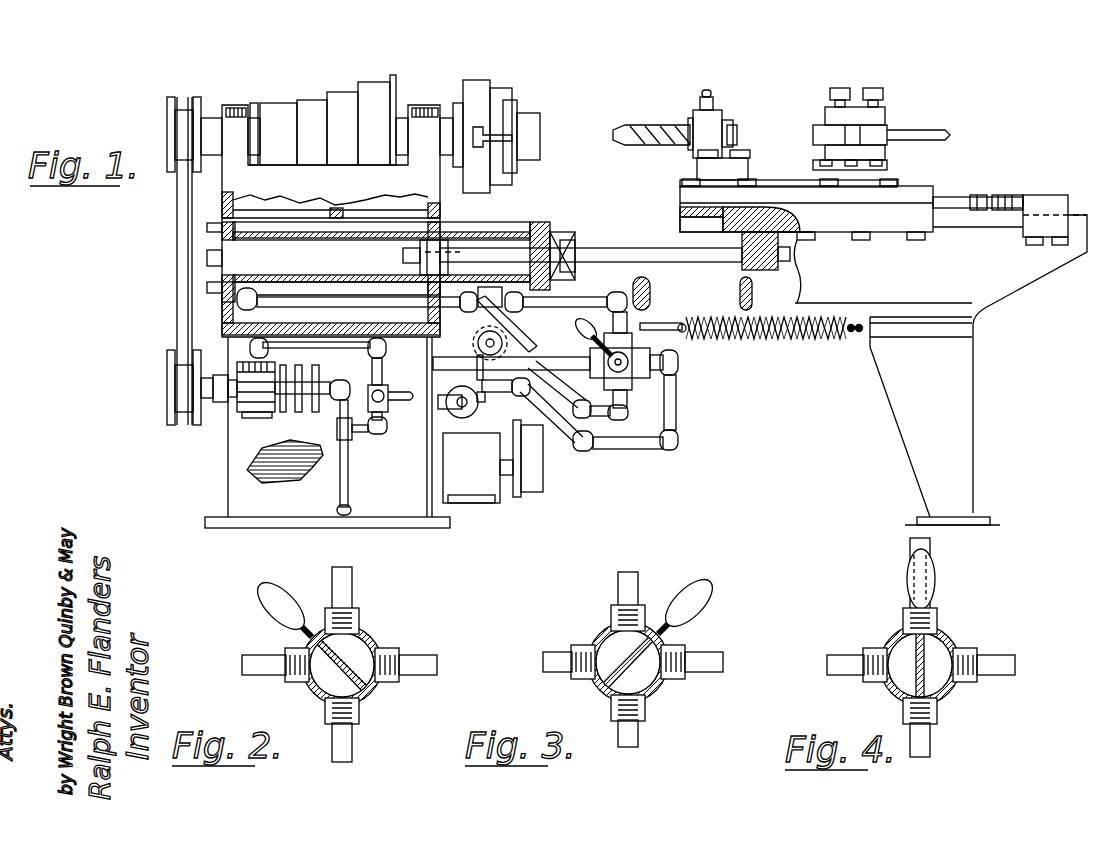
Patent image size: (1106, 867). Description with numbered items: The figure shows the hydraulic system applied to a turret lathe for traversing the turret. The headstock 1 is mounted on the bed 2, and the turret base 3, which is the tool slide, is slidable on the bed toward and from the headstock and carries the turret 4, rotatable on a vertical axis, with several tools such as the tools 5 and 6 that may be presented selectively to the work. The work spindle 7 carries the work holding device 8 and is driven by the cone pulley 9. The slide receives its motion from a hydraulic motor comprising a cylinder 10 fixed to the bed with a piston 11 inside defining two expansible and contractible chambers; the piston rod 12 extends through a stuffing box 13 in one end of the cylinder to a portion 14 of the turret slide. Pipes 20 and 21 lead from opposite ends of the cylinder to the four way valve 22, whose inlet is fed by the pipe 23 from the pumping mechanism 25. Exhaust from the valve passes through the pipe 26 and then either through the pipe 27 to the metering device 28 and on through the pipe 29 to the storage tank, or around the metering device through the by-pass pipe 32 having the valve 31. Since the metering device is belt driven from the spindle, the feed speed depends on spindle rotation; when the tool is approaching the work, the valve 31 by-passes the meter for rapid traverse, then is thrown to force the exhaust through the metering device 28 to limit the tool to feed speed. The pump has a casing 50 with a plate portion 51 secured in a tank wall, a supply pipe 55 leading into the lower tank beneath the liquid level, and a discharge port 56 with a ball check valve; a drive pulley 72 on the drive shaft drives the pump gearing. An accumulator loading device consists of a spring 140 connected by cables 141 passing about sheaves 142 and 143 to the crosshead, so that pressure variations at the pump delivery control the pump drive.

In FIG. 1, the headstock 1 is at (350, 193).
In FIG. 1, the bed 2 is at (872, 283).
In FIG. 1, the turret base 3 is at (895, 202).
In FIG. 1, the turret 4 is at (758, 182).
In FIG. 1, the tool 5 is at (650, 125).
In FIG. 1, the tool 6 is at (886, 135).
In FIG. 1, the work spindle 7 is at (456, 108).
In FIG. 1, the work holding device 8 is at (480, 100).
In FIG. 1, the cone pulley 9 is at (306, 112).
In FIG. 1, the cylinder 10 is at (480, 232).
In FIG. 1, the piston 11 is at (402, 248).
In FIG. 1, the piston rod 12 is at (604, 250).
In FIG. 1, the stuffing box 13 is at (556, 232).
In FIG. 1, the portion of turret slide 14 is at (760, 272).
In FIG. 1, the pipe 20 is at (570, 301).
In FIG. 2, the pipe 20 is at (328, 599).
In FIG. 3, the pipe 20 is at (609, 596).
In FIG. 4, the pipe 20 is at (896, 585).
In FIG. 1, the pipe 21 is at (522, 352).
In FIG. 2, the pipe 21 is at (360, 730).
In FIG. 3, the pipe 21 is at (651, 723).
In FIG. 4, the pipe 21 is at (943, 727).
In FIG. 1, the four way valve 22 is at (633, 366).
In FIG. 2, the four way valve 22 is at (332, 640).
In FIG. 3, the four way valve 22 is at (626, 637).
In FIG. 4, the four way valve 22 is at (910, 647).
In FIG. 1, the pipe 23 is at (652, 449).
In FIG. 2, the pipe 23 is at (412, 651).
In FIG. 3, the pipe 23 is at (708, 645).
In FIG. 4, the pipe 23 is at (986, 647).
In FIG. 1, the pumping mechanism 25 is at (478, 468).
In FIG. 1, the pipe 26 is at (560, 370).
In FIG. 2, the pipe 26 is at (273, 651).
In FIG. 3, the pipe 26 is at (568, 644).
In FIG. 4, the pipe 26 is at (856, 648).
In FIG. 1, the pipe 27 is at (330, 347).
In FIG. 1, the metering device 28 is at (256, 396).
In FIG. 1, the pipe 29 is at (342, 480).
In FIG. 1, the valve 31 is at (386, 410).
In FIG. 1, the pipe 32 is at (362, 438).
In FIG. 1, the casing 50 is at (242, 470).
In FIG. 1, the plate portion 51 is at (422, 485).
In FIG. 1, the supply pipe 55 is at (172, 386).
In FIG. 1, the discharge port 56 is at (176, 262).
In FIG. 1, the drive pulley 72 is at (530, 464).
In FIG. 1, the spring 140 is at (792, 341).
In FIG. 1, the cables 141 is at (650, 325).
In FIG. 1, the sheave 142 is at (478, 348).
In FIG. 1, the sheave 143 is at (480, 398).